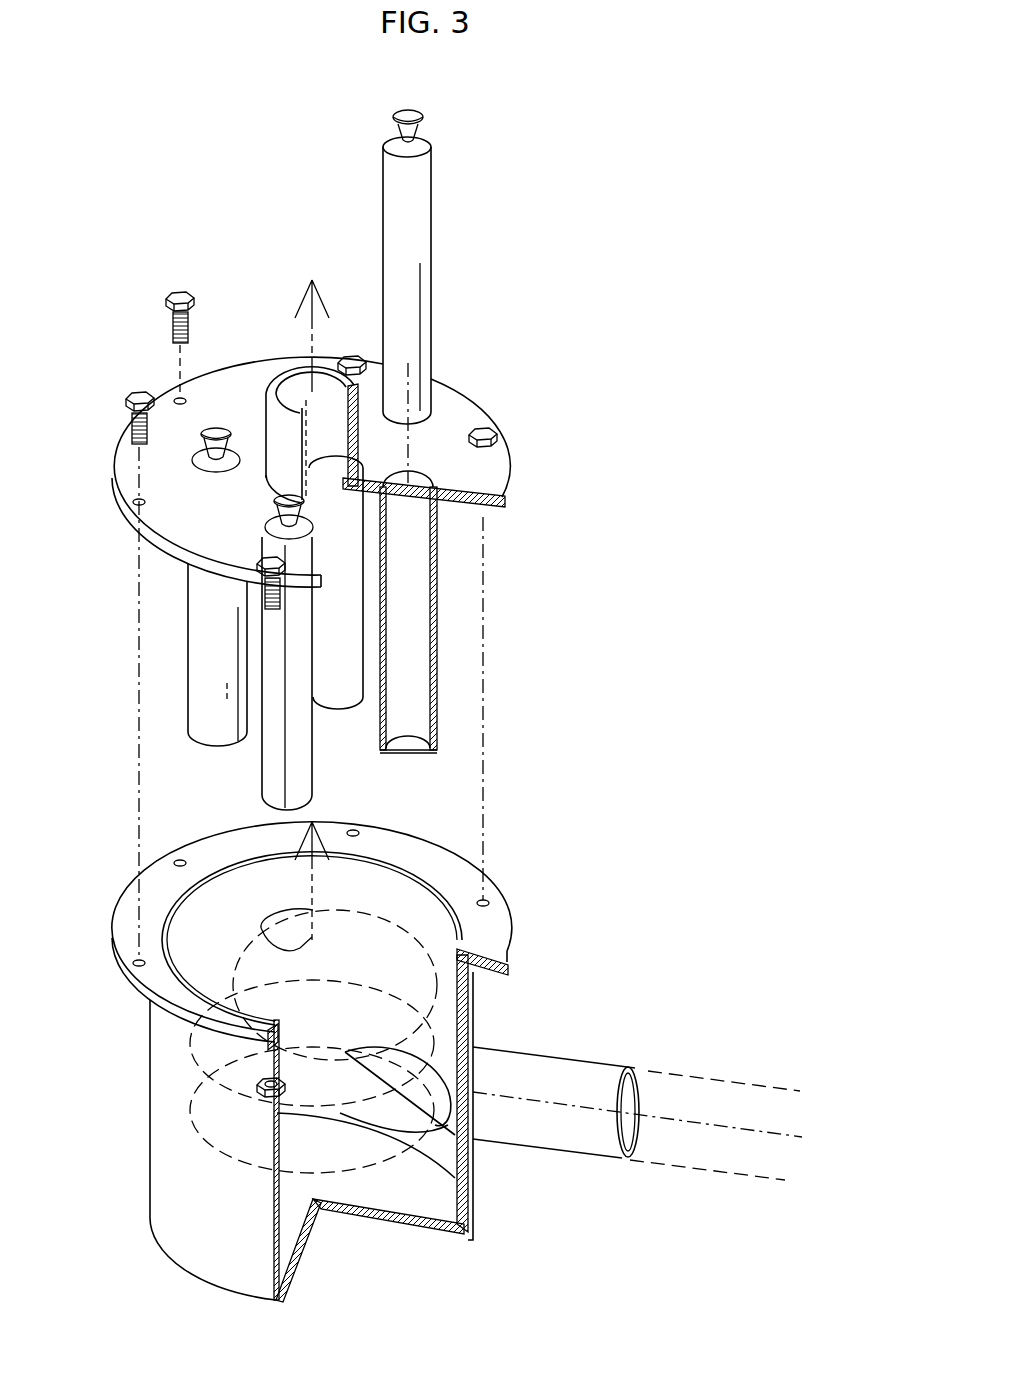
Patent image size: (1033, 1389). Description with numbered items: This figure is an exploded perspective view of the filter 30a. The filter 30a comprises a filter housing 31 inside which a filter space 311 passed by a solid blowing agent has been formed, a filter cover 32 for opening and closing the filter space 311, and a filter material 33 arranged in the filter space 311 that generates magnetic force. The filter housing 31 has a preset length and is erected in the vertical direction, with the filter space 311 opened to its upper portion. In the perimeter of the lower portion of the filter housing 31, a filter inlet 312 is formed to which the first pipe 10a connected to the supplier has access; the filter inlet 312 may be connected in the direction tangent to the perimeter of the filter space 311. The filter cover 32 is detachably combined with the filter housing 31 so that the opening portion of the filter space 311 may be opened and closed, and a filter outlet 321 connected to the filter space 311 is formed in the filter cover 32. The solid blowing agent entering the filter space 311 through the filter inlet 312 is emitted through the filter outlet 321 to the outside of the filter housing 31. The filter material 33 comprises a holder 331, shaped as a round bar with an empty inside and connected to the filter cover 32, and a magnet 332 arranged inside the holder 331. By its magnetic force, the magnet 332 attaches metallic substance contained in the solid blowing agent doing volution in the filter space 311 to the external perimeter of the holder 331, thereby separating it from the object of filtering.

The filter 30a is at (222, 242).
The filter cover 32 is at (207, 538).
The filter outlet 321 is at (292, 392).
The filter material 33 is at (580, 407).
The holder 331 is at (433, 567).
The magnet 332 is at (398, 337).
The filter housing 31 is at (180, 1215).
The filter space 311 is at (360, 1197).
The filter inlet 312 is at (455, 1145).
The first pipe 10a is at (680, 1070).